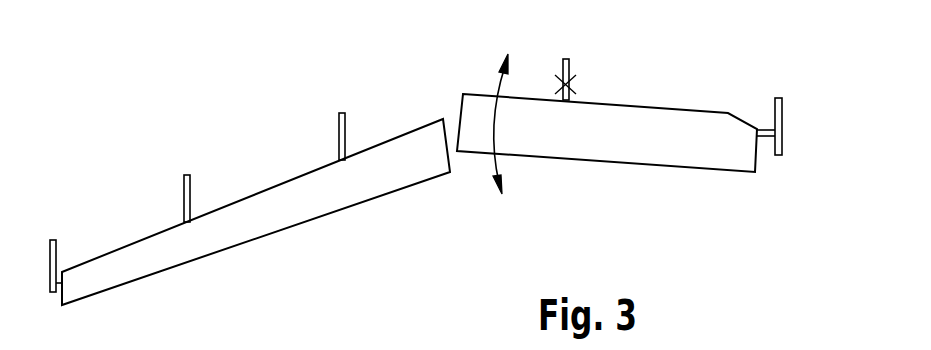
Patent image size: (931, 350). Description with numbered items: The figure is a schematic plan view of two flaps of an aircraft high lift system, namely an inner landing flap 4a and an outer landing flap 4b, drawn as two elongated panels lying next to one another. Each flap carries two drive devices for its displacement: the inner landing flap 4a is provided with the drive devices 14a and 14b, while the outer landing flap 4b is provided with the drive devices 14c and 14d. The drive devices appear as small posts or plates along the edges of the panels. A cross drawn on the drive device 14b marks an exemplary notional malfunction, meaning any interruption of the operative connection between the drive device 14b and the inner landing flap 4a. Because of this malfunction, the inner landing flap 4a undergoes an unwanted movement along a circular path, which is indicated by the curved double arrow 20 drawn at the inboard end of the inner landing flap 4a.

The inner landing flap 4a is at (627, 140).
The outer landing flap 4b is at (271, 215).
The drive device 14a is at (777, 98).
The drive device 14b is at (564, 59).
The drive device 14c is at (341, 113).
The drive device 14d is at (186, 175).
The double arrow 20 is at (495, 87).